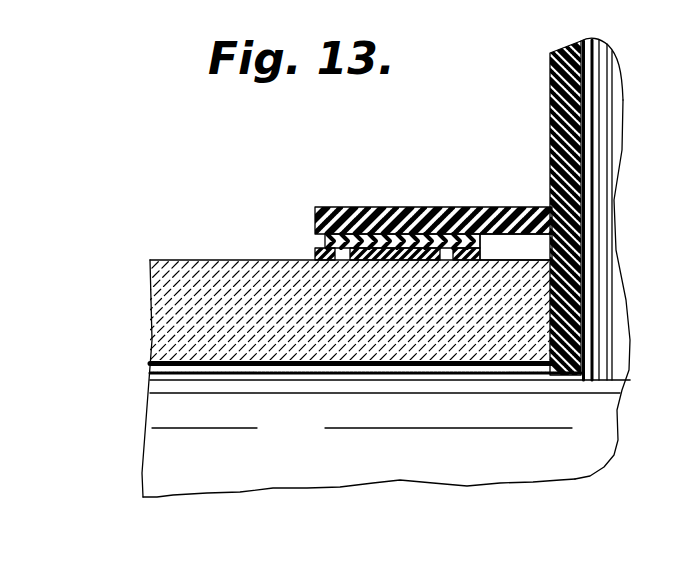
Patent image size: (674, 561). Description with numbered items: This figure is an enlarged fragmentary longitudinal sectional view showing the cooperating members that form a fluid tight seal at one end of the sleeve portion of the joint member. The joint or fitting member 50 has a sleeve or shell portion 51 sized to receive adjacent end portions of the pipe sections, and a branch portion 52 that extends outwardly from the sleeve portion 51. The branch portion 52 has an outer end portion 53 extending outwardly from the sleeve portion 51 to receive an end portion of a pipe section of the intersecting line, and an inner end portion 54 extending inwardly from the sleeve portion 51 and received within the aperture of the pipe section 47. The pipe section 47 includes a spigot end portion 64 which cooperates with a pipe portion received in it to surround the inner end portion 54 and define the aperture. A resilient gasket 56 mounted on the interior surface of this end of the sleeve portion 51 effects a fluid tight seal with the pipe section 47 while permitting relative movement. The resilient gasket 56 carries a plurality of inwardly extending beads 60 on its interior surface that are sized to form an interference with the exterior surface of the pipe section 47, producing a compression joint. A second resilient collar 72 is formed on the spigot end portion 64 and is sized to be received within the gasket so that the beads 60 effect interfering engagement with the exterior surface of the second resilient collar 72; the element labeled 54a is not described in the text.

The pipe section 47 is at (191, 256).
The joint or fitting member 50 is at (419, 209).
The sleeve or shell portion 51 is at (397, 207).
The branch portion 52 is at (550, 58).
The outer end portion 53 is at (614, 92).
The inner end portion 54 is at (617, 368).
The outer wall 54a is at (624, 289).
The resilient gasket 56 is at (318, 240).
The inwardly extending beads 60 is at (343, 259).
The spigot end portion 64 is at (483, 474).
The second resilient collar 72 is at (480, 252).